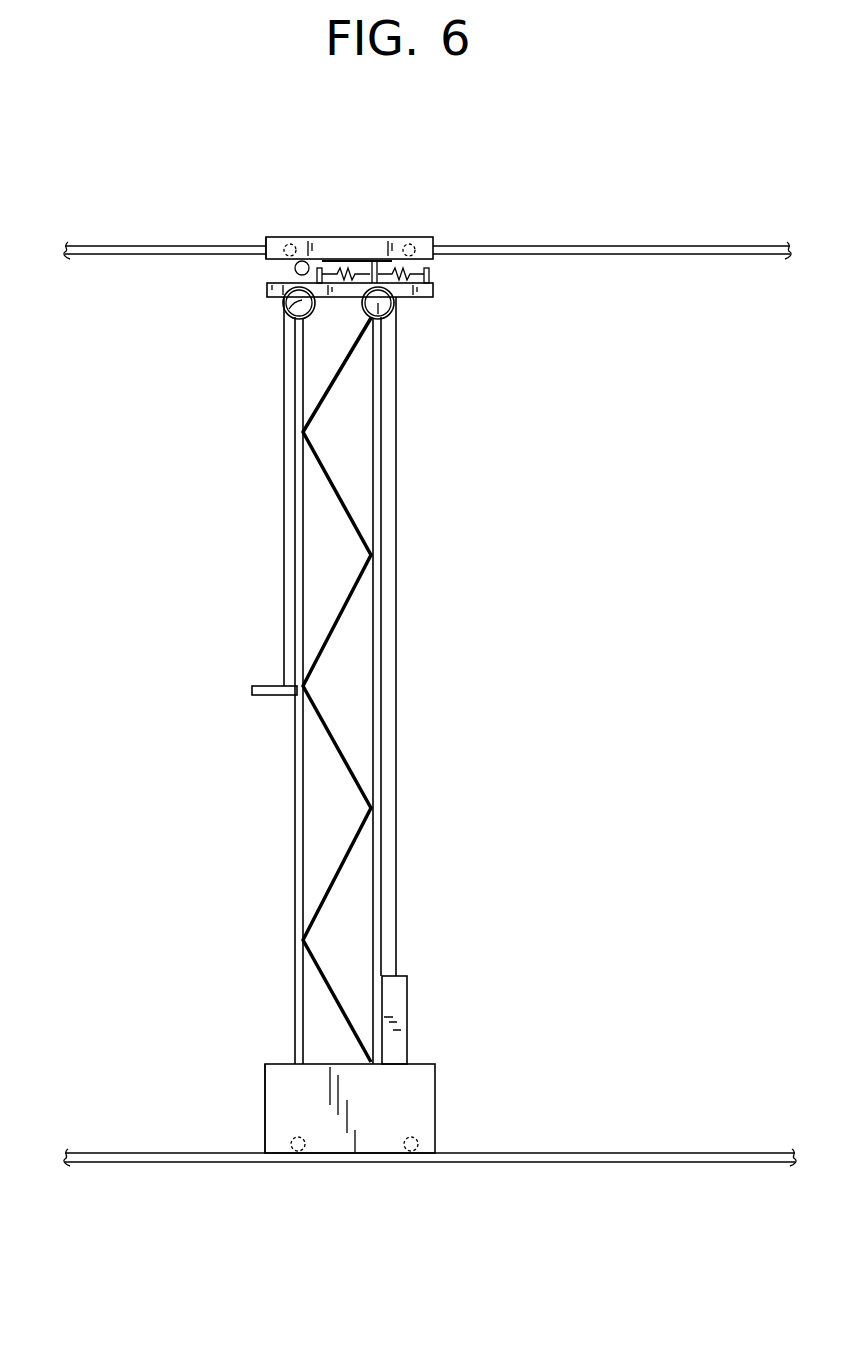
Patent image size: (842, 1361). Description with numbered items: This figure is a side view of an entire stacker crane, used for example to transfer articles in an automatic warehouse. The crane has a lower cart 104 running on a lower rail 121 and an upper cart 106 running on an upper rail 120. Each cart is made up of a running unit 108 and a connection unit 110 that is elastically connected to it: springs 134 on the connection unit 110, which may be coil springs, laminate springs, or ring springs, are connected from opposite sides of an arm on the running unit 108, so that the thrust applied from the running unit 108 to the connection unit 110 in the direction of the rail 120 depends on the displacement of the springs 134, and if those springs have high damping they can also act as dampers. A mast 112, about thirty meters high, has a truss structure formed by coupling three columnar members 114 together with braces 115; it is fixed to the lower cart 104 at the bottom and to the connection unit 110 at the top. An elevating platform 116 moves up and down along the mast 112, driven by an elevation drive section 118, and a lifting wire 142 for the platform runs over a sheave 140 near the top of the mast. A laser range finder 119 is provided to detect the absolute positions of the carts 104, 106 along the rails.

The lower cart 104 is at (423, 1088).
The upper cart 106 is at (352, 226).
The running unit 108 is at (318, 237).
The connection unit 110 is at (422, 298).
The mast 112 is at (418, 678).
The columnar member 114 is at (292, 548).
The brace 115 is at (340, 370).
The elevating platform 116 is at (267, 695).
The elevation drive section 118 is at (398, 1005).
The laser range finder 119 is at (260, 238).
The upper rail 120 is at (662, 255).
The lower rail 121 is at (667, 1153).
The spring 134 is at (425, 237).
The sheave 140 is at (287, 317).
The lifting wire 142 is at (283, 487).